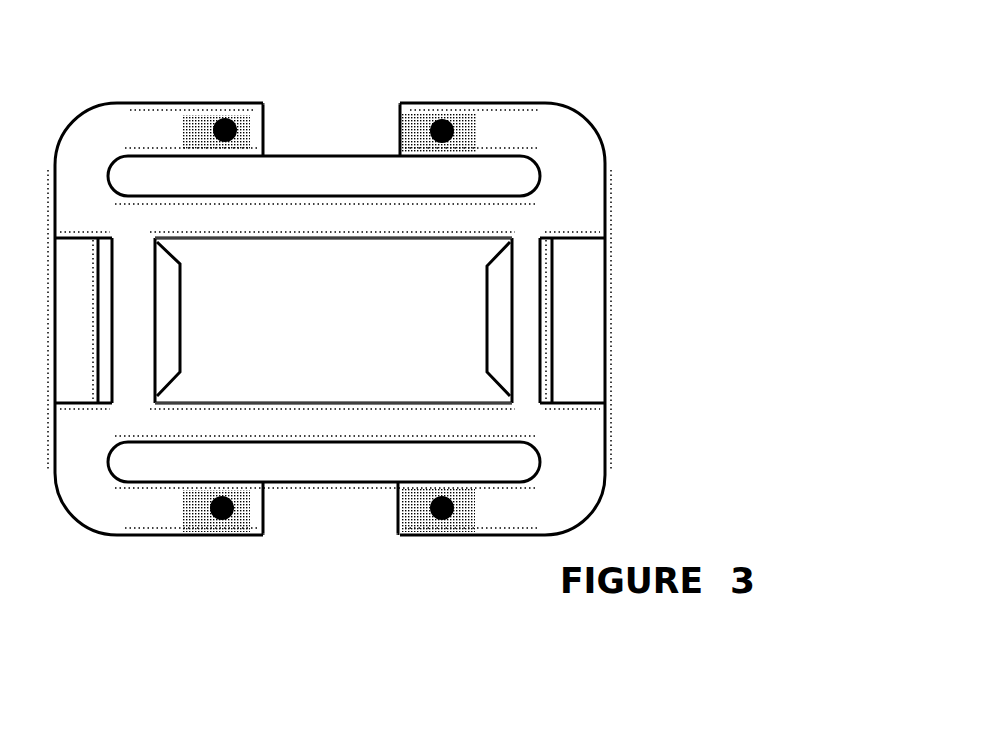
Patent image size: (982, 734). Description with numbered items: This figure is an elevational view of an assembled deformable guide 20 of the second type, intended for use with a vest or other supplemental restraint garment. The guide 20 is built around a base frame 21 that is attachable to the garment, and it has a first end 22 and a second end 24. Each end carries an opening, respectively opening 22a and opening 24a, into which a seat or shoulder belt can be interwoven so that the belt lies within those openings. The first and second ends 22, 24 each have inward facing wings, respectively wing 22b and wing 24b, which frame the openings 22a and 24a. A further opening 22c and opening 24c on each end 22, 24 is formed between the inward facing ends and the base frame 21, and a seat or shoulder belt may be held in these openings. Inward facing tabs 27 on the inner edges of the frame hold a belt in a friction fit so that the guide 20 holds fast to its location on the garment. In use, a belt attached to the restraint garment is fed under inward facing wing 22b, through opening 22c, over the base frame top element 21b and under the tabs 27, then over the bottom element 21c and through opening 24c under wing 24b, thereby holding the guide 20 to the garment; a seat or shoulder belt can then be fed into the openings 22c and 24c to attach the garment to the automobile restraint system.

The guide 20 is at (503, 120).
The base frame 21 is at (325, 218).
The base frame top element 21b is at (260, 227).
The bottom element 21c is at (352, 414).
The first end 22 is at (93, 103).
The opening 22a is at (296, 123).
The inward facing wing 22b is at (207, 120).
The opening 22c is at (157, 177).
The second end 24 is at (478, 518).
The opening 24a is at (312, 512).
The inward facing wing 24b is at (245, 530).
The opening 24c is at (183, 460).
The tabs 27 is at (598, 168).